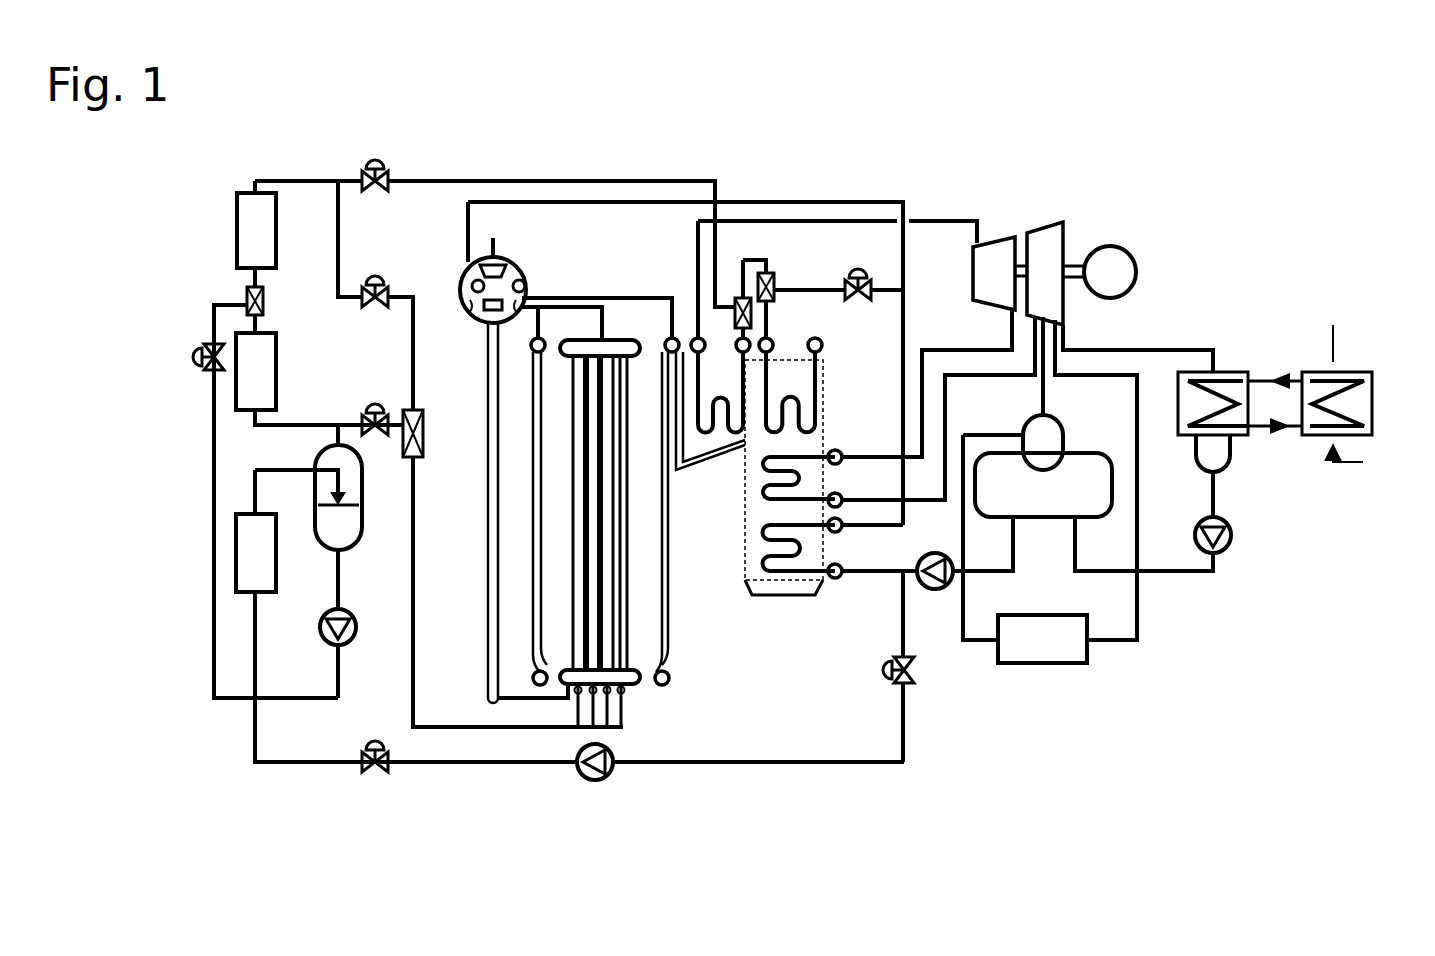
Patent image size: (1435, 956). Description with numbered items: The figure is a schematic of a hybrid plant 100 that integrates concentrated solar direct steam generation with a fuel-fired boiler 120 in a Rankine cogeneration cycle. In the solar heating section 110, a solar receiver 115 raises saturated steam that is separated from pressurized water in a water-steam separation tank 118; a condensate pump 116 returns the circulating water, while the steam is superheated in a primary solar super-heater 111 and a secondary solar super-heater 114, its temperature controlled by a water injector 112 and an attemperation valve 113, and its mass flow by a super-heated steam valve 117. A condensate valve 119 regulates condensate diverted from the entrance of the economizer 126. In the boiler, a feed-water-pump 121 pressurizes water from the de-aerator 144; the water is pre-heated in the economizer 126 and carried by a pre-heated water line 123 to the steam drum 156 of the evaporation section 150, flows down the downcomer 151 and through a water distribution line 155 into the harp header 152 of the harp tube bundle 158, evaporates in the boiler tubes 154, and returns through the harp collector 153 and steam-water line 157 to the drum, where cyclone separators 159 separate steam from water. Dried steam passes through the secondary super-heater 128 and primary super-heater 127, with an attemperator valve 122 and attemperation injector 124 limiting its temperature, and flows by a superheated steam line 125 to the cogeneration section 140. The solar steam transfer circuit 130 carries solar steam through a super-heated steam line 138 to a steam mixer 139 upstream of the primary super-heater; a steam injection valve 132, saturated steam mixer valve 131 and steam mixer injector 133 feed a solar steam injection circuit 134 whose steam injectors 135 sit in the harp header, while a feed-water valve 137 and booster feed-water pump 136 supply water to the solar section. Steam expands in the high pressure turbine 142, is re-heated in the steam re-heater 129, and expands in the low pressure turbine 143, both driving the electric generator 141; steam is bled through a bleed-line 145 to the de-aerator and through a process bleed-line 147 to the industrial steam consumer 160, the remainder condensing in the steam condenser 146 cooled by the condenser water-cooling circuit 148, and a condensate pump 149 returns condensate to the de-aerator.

The hybrid plant 100 is at (1140, 200).
The solar heating section 110 is at (132, 265).
The primary solar super-heater 111 is at (255, 230).
The water injector 112 is at (247, 296).
The attemperation valve 113 is at (196, 360).
The secondary solar super-heater 114 is at (256, 371).
The solar receiver 115 is at (256, 553).
The condensate pump 116 is at (342, 612).
The super-heated steam valve 117 is at (378, 166).
The water-steam separation tank 118 is at (348, 500).
The condensate valve 119 is at (372, 748).
The fuel-fired boiler 120 is at (595, 168).
The feed-water-pump 121 is at (933, 556).
The attemperator valve 122 is at (860, 275).
The pre-heated water line 123 is at (815, 201).
The attemperation injector 124 is at (770, 280).
The superheated steam line 125 is at (942, 220).
The economizer 126 is at (786, 556).
The primary super-heater 127 is at (707, 395).
The secondary super-heater 128 is at (797, 395).
The steam re-heater 129 is at (790, 487).
The solar steam transfer circuit 130 is at (325, 168).
The saturated steam mixer valve 131 is at (380, 408).
The steam injection valve 132 is at (375, 279).
The steam mixer injector 133 is at (414, 445).
The solar steam injection circuit 134 is at (400, 700).
The steam injector 135 is at (624, 692).
The booster feed-water pump 136 is at (598, 780).
The feed-water valve 137 is at (880, 673).
The super-heated steam line 138 is at (522, 179).
The steam mixer 139 is at (735, 326).
The cogeneration section 140 is at (1205, 303).
The electric generator 141 is at (1130, 263).
The high pressure turbine 142 is at (1000, 273).
The low pressure turbine 143 is at (1045, 273).
The de-aerator 144 is at (1043, 485).
The bleed-line 145 is at (1046, 402).
The steam condenser 146 is at (1216, 450).
The process bleed-line 147 is at (958, 350).
The condenser water-cooling circuit 148 is at (1325, 376).
The condensate pump 149 is at (1226, 546).
The evaporation section 150 is at (478, 620).
The downcomer 151 is at (486, 508).
The harp header 152 is at (630, 668).
The harp collector 153 is at (622, 346).
The boiler tubes 154 is at (577, 575).
The water distribution line 155 is at (565, 700).
The steam drum 156 is at (486, 320).
The steam-water line 157 is at (598, 320).
The harp tube bundle 158 is at (637, 428).
The cyclone separators 159 is at (472, 285).
The industrial steam consumer 160 is at (1042, 639).